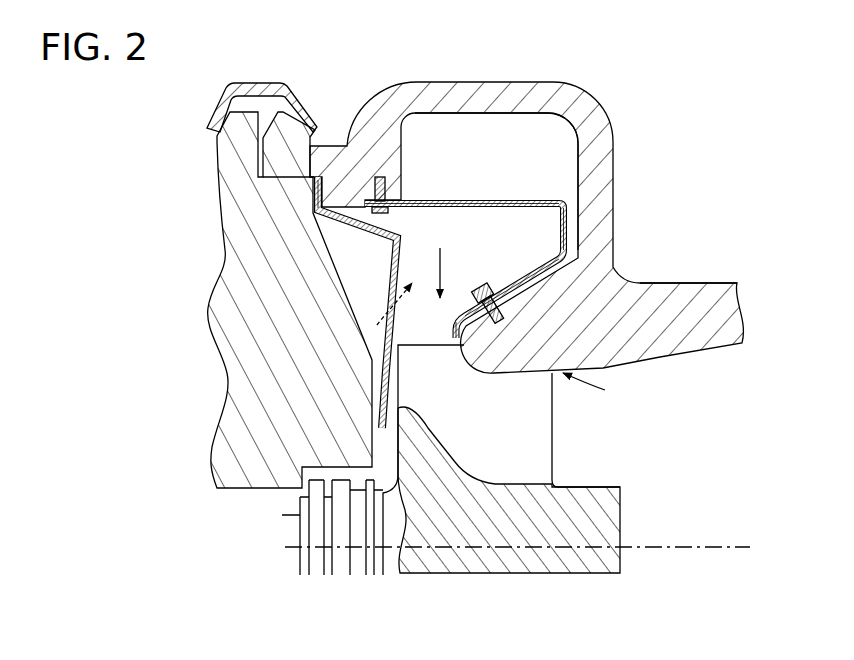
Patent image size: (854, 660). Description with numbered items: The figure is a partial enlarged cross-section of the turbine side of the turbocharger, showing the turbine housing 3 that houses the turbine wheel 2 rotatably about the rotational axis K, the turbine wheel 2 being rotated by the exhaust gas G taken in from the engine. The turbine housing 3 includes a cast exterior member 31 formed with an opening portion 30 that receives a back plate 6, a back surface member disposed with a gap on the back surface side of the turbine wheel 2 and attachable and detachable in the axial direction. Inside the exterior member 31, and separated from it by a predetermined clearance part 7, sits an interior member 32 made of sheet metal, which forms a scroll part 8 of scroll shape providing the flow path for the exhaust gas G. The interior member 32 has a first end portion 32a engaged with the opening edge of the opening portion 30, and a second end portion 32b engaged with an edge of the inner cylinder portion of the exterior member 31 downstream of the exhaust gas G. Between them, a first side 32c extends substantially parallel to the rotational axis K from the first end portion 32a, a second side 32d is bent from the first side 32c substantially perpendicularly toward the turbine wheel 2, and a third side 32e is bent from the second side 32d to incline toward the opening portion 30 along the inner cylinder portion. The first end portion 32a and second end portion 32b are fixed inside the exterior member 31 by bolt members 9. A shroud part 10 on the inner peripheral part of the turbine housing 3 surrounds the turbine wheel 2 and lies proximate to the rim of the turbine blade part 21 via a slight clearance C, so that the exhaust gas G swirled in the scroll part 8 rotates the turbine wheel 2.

The turbine wheel 2 is at (597, 522).
The turbine housing 3 is at (630, 78).
The back plate 6 is at (385, 378).
The clearance part 7 is at (542, 140).
The scroll part 8 is at (537, 201).
The bolt member 9 is at (357, 190).
The shroud part 10 is at (578, 298).
The turbine blade part 21 is at (495, 430).
The opening portion 30 is at (375, 323).
The exterior member 31 is at (450, 80).
The interior member 32 is at (470, 197).
The first end portion 32a is at (350, 208).
The second end portion 32b is at (451, 341).
The first side 32c is at (507, 199).
The second side 32d is at (573, 213).
The third side 32e is at (530, 208).
The exhaust gas G is at (413, 271).
The clearance C is at (595, 388).
The rotational axis K is at (728, 545).